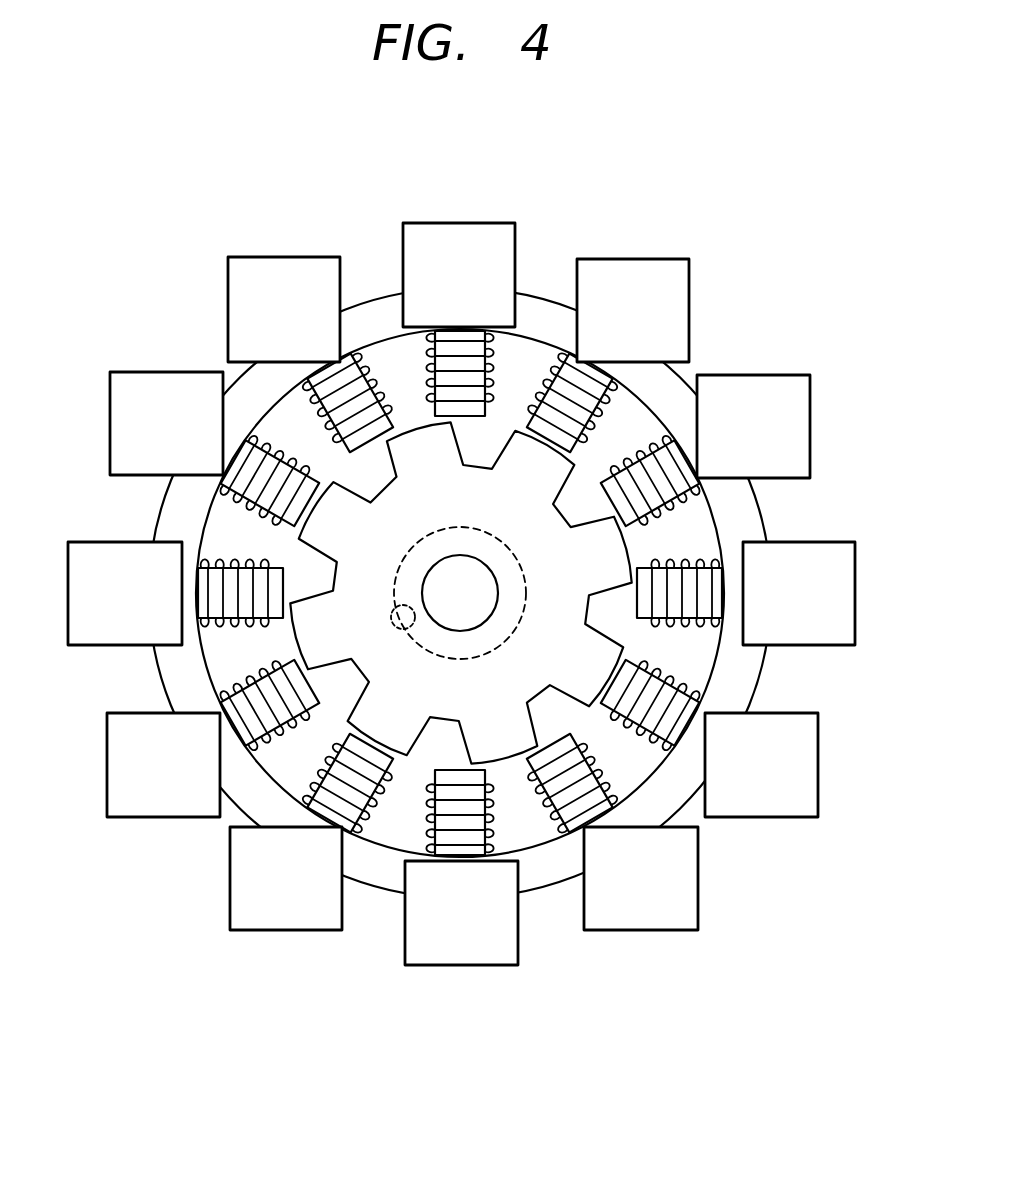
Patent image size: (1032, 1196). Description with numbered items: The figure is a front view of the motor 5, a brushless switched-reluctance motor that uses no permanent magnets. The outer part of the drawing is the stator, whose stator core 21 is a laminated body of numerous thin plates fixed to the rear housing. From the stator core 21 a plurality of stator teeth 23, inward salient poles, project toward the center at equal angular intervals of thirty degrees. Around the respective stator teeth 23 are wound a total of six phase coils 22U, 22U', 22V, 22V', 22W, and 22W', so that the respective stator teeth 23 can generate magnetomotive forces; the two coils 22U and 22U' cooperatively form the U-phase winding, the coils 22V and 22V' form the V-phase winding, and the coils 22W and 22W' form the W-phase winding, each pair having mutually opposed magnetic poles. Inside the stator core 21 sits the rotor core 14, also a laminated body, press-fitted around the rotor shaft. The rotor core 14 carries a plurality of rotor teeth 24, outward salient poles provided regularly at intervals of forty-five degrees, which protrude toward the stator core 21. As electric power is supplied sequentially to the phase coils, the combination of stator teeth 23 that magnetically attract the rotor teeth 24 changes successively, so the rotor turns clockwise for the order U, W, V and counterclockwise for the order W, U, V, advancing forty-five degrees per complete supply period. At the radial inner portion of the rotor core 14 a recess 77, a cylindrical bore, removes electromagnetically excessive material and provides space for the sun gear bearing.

The motor 5 is at (478, 569).
The stator core 21 is at (553, 296).
The stator teeth 23 is at (468, 408).
The U-phase coil 22U is at (684, 442).
The V-phase coil 22V is at (467, 416).
The W-phase coil 22W is at (615, 347).
The U-phase coil 22U' is at (254, 756).
The V-phase coil 22V' is at (443, 801).
The W-phase coil 22W' is at (323, 843).
The rotor core 14 is at (375, 506).
The rotor teeth 24 is at (373, 477).
The recess 77 is at (392, 614).